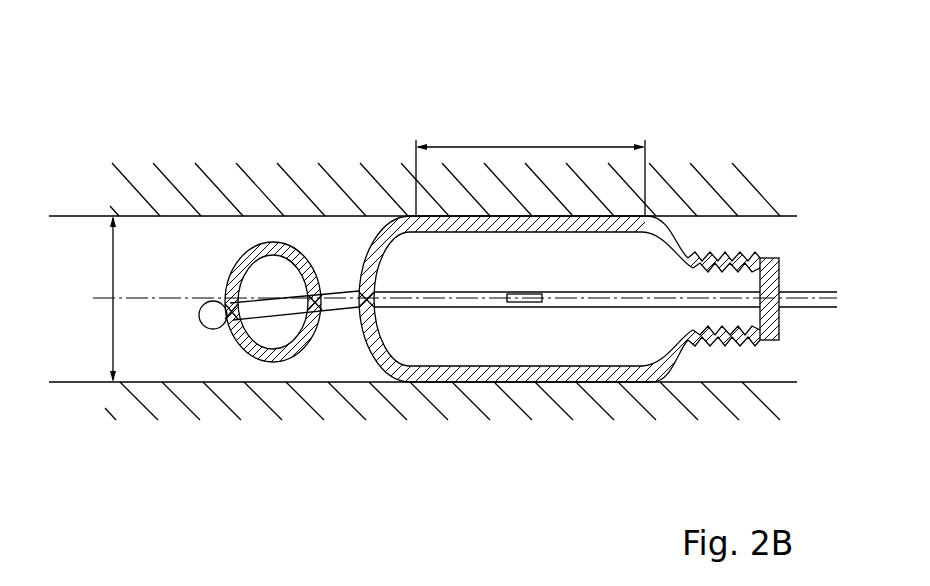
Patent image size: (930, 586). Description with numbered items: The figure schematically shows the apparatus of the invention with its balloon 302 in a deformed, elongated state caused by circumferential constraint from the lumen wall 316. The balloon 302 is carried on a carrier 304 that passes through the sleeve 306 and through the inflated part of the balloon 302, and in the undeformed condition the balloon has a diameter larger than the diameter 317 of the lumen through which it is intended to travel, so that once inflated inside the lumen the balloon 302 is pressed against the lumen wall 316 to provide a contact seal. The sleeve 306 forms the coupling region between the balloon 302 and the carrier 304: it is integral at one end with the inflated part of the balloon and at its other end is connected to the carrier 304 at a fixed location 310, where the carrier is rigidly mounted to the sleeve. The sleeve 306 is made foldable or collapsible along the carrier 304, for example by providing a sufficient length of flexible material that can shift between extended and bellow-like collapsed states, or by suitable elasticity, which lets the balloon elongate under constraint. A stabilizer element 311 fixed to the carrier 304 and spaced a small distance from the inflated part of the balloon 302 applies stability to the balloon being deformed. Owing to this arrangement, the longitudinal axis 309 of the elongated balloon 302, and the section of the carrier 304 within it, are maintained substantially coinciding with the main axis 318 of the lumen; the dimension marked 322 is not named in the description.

The balloon 302 is at (369, 250).
The carrier 304 is at (445, 288).
The sleeve 306 is at (757, 270).
The longitudinal axis 309 is at (565, 303).
The fixed location 310 is at (768, 341).
The stabilizer element 311 is at (238, 256).
The lumen wall 316 is at (190, 182).
The diameter of the lumen 317 is at (112, 272).
The main axis of the lumen 318 is at (199, 300).
The capsule length 322 is at (532, 147).